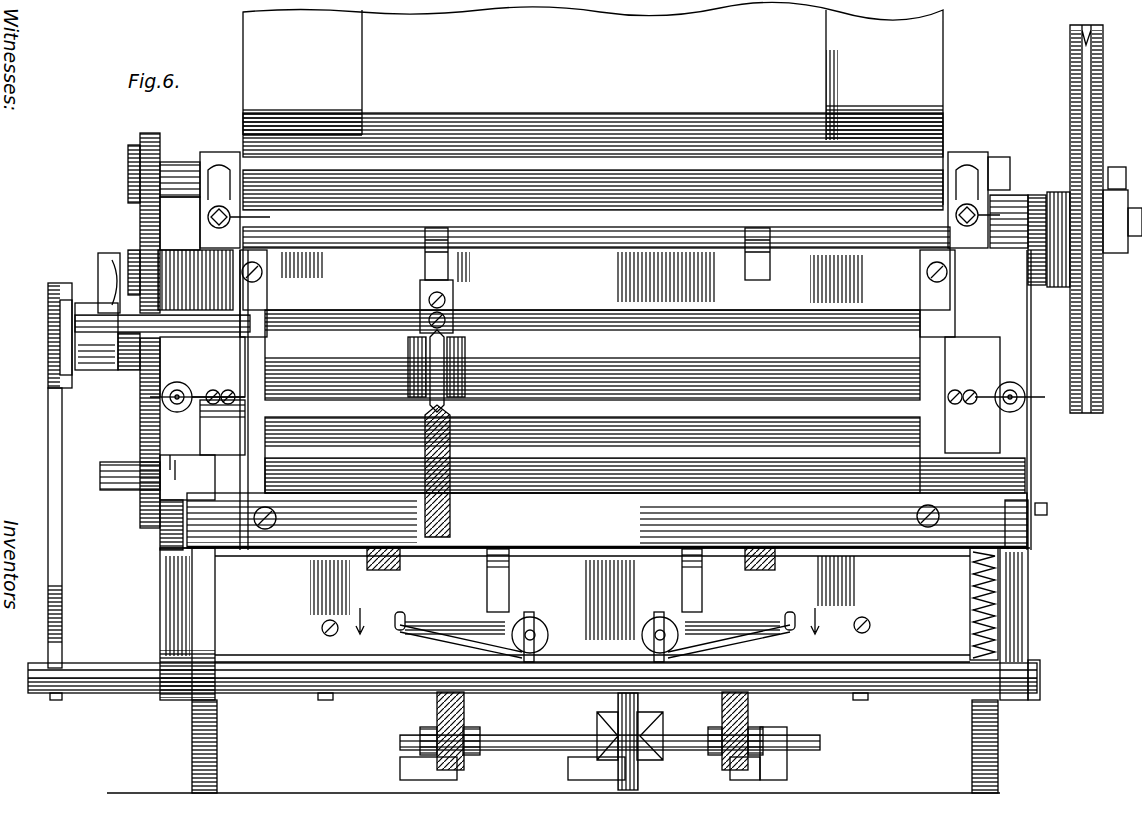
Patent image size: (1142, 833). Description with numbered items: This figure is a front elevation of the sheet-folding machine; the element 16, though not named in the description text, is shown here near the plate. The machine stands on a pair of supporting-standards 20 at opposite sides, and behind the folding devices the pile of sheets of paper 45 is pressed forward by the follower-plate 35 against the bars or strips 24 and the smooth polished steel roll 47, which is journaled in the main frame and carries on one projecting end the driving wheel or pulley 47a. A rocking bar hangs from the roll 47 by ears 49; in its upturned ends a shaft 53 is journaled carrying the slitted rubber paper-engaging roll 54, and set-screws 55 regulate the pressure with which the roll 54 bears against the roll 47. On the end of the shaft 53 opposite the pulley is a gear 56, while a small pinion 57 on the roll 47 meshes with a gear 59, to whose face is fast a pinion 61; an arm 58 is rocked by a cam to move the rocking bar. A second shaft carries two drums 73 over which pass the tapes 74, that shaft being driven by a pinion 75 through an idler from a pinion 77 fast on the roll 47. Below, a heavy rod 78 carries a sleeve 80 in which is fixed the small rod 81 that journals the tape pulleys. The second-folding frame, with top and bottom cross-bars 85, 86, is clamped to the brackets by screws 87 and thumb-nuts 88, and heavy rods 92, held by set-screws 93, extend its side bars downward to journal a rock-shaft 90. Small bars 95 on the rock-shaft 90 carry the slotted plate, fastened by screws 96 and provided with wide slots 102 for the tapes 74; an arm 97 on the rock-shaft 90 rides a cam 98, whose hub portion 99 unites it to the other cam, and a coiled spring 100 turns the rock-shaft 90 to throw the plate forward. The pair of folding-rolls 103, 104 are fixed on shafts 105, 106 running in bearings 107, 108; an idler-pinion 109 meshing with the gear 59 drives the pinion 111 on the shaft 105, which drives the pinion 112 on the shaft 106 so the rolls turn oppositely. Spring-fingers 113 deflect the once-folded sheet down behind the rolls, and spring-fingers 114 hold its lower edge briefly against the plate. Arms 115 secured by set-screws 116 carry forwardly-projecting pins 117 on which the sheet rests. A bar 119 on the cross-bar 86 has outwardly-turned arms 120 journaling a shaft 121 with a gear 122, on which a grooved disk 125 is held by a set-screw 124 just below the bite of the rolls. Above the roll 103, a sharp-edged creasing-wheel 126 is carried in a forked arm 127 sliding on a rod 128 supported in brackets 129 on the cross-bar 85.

The stop pin 16 is at (592, 621).
The supporting-standards 20 is at (205, 745).
The bars or strips 24 is at (400, 770).
The follower-plate 35 is at (918, 44).
The pile of sheets of paper 45 is at (782, 80).
The roll 47 is at (915, 222).
The driving wheel or pulley 47a is at (1080, 97).
The ears 49 is at (220, 163).
The shaft 53 is at (172, 172).
The paper-engaging roll 54 is at (945, 160).
The set-screws 55 is at (629, 202).
The gear 56 is at (155, 130).
The pinion 57 is at (140, 213).
The arm 58 is at (120, 293).
The gear 59 is at (176, 233).
The pinion 61 is at (130, 252).
The drums 73 is at (395, 243).
The tapes 74 is at (465, 705).
The pinion 75 is at (1036, 285).
The pinion 77 is at (1037, 195).
The heavy rod 78 is at (640, 760).
The sleeve 80 is at (620, 735).
The small rod 81 is at (490, 745).
The top cross-bar 85 is at (763, 325).
The bottom cross-bar 86 is at (222, 427).
The screws 87 is at (195, 380).
The thumb-nuts 88 is at (1040, 400).
The rock-shaft 90 is at (950, 682).
The heavy rods 92 is at (165, 597).
The set-screws 93 is at (1047, 509).
The small bars 95 is at (325, 700).
The screws 96 is at (333, 620).
The arm 97 is at (145, 540).
The cam 98 is at (48, 345).
The hub portion 99 is at (98, 372).
The coiled spring 100 is at (972, 578).
The slots 102 is at (405, 560).
The folding-roll 103 is at (505, 350).
The folding-roll 104 is at (605, 436).
The shaft 105 is at (195, 338).
The shaft 106 is at (187, 477).
The bearings 107 is at (310, 340).
The bearings 108 is at (300, 405).
The idler-pinion 109 is at (200, 290).
The pinion 111 is at (140, 333).
The pinion 112 is at (140, 418).
The spring-fingers 113 is at (430, 230).
The spring-fingers 114 is at (486, 598).
The arms 115 is at (400, 632).
The set-screws 116 is at (530, 617).
The pins 117 is at (398, 610).
The bar 119 is at (905, 540).
The arms 120 is at (165, 520).
The shaft 121 is at (110, 470).
The gear 122 is at (145, 525).
The set-screw 124 is at (418, 455).
The disk 125 is at (460, 420).
The creasing-wheel 126 is at (405, 352).
The forked arm 127 is at (450, 290).
The rod 128 is at (585, 325).
The brackets 129 is at (262, 293).